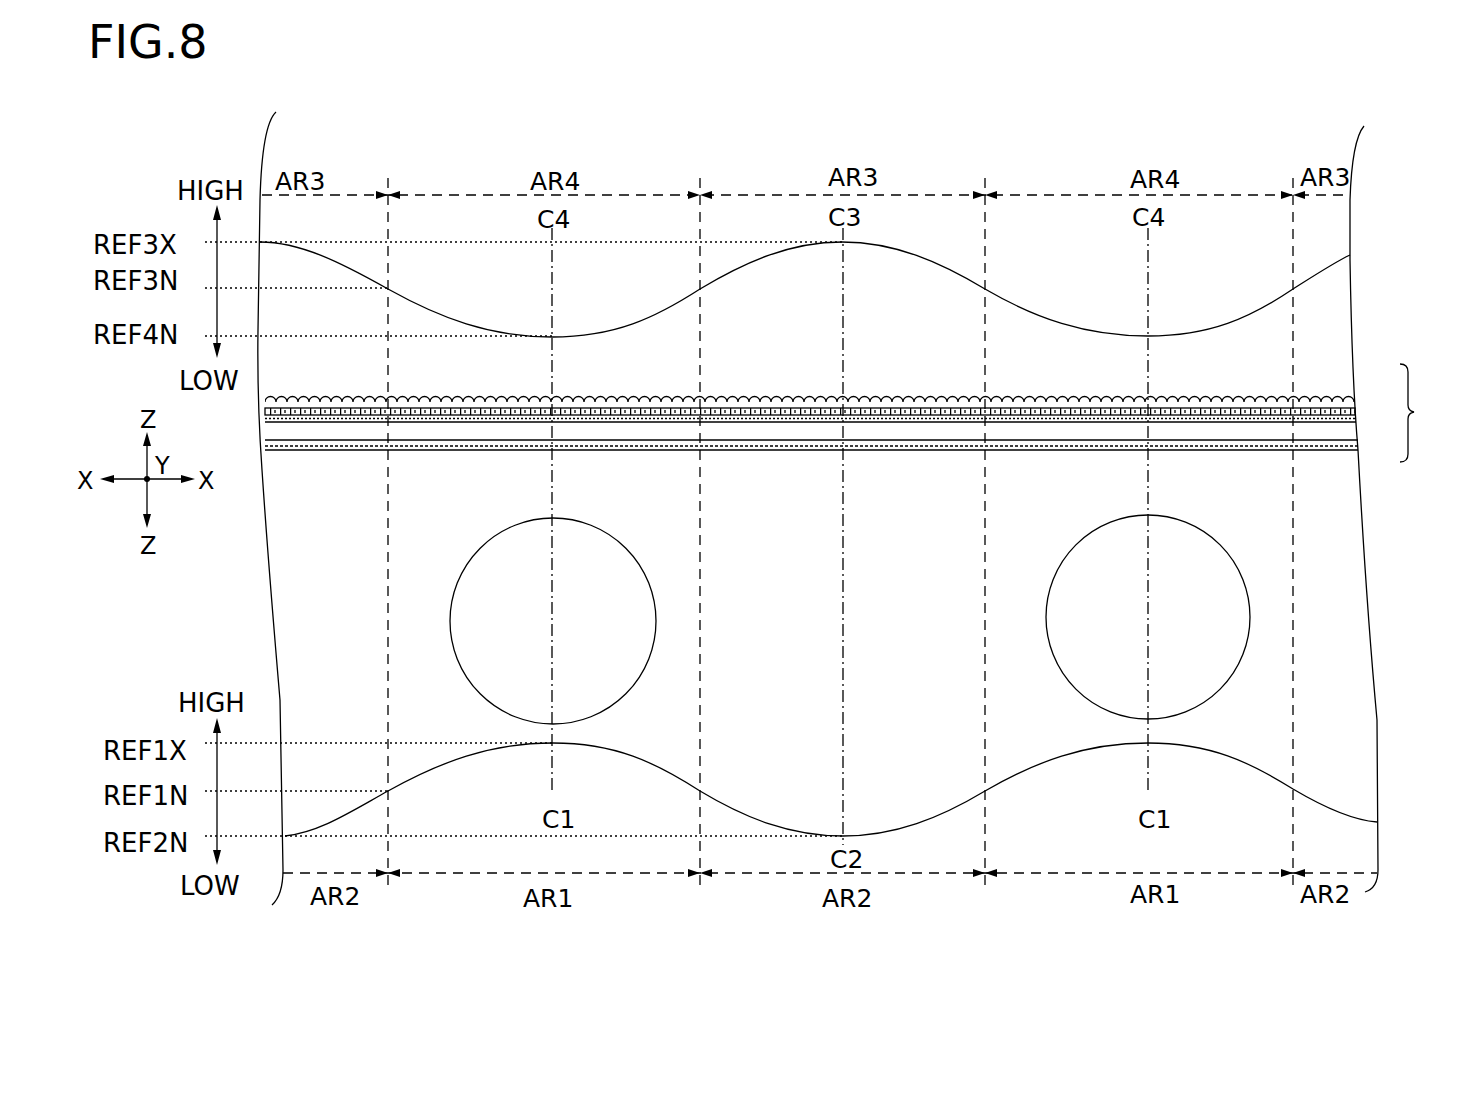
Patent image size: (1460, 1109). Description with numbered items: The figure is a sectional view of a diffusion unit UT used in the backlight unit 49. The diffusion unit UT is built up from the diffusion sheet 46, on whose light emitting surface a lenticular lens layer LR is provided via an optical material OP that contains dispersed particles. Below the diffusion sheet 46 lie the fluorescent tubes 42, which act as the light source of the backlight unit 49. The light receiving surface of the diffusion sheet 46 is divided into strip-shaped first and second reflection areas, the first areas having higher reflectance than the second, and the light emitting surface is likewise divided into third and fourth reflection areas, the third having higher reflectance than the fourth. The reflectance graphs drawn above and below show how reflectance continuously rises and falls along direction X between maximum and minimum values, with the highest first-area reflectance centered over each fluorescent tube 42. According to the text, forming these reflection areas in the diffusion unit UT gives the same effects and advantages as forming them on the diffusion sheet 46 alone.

The backlight unit 49 is at (158, 191).
The fluorescent tube 42 is at (850, 619).
The diffusion sheet 46 is at (1364, 416).
The lenticular lens layer LR is at (1355, 393).
The optical material OP is at (1364, 402).
The diffusion unit UT is at (1425, 413).